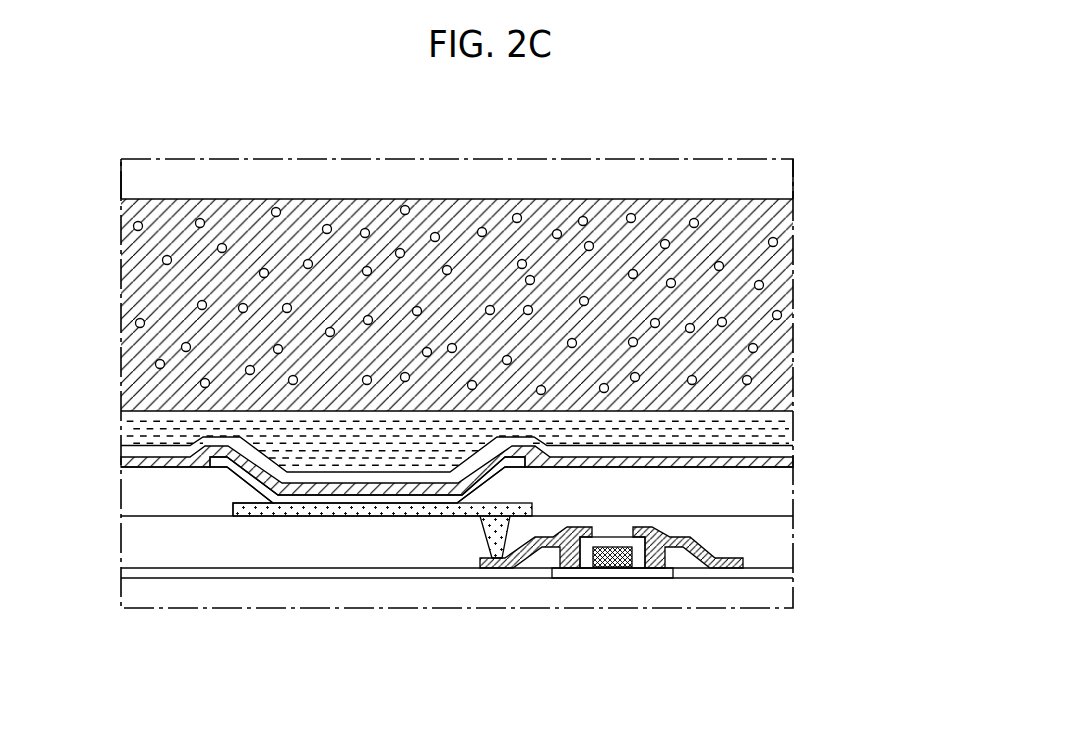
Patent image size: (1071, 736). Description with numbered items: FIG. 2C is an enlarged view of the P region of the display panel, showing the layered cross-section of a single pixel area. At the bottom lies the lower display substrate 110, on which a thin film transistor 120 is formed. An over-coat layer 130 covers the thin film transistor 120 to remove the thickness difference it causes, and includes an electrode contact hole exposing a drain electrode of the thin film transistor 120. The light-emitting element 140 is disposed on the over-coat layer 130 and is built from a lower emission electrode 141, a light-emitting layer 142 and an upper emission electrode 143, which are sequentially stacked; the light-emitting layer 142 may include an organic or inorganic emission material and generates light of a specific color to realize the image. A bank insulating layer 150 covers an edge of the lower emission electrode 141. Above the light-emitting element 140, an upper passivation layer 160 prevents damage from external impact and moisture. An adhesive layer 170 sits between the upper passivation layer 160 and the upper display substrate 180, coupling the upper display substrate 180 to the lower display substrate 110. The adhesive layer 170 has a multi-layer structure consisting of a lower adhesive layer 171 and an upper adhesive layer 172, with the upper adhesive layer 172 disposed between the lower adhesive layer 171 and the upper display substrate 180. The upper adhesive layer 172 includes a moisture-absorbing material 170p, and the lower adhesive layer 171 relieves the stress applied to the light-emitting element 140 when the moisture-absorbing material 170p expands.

The P region P is at (123, 158).
The lower display substrate 110 is at (787, 592).
The thin film transistor 120 is at (602, 580).
The over-coat layer 130 is at (787, 538).
The light-emitting element 140 is at (457, 589).
The lower emission electrode 141 is at (367, 507).
The light-emitting layer 142 is at (328, 498).
The upper emission electrode 143 is at (257, 470).
The bank insulating layer 150 is at (787, 490).
The upper passivation layer 160 is at (128, 455).
The adhesive layer 170 is at (486, 332).
The moisture-absorbing material 170p is at (178, 347).
The lower adhesive layer 171 is at (494, 440).
The upper adhesive layer 172 is at (797, 333).
The upper display substrate 180 is at (785, 177).